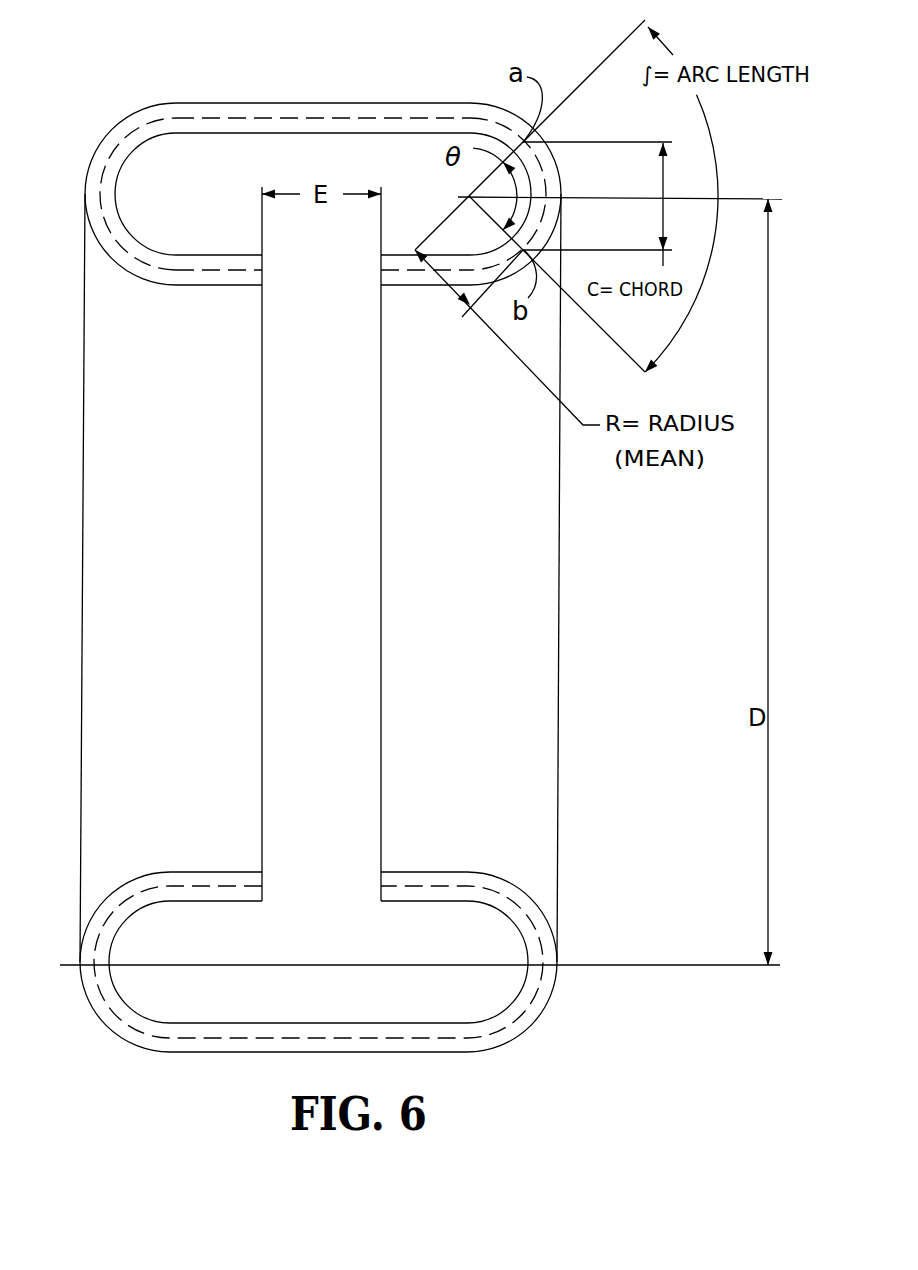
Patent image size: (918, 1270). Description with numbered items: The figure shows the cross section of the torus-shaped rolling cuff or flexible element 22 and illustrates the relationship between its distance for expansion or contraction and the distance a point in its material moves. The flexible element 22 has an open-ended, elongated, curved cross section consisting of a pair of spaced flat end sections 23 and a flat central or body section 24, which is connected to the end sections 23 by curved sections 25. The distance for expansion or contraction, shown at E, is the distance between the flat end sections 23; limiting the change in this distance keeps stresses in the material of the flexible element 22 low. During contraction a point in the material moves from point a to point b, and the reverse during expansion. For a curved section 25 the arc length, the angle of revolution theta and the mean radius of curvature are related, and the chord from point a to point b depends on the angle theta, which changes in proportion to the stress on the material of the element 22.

The flexible annular element or rolling cuff 22 is at (350, 553).
The flat end sections 23 is at (228, 286).
The flat central or body section 24 is at (327, 103).
The curved sections 25 is at (120, 177).